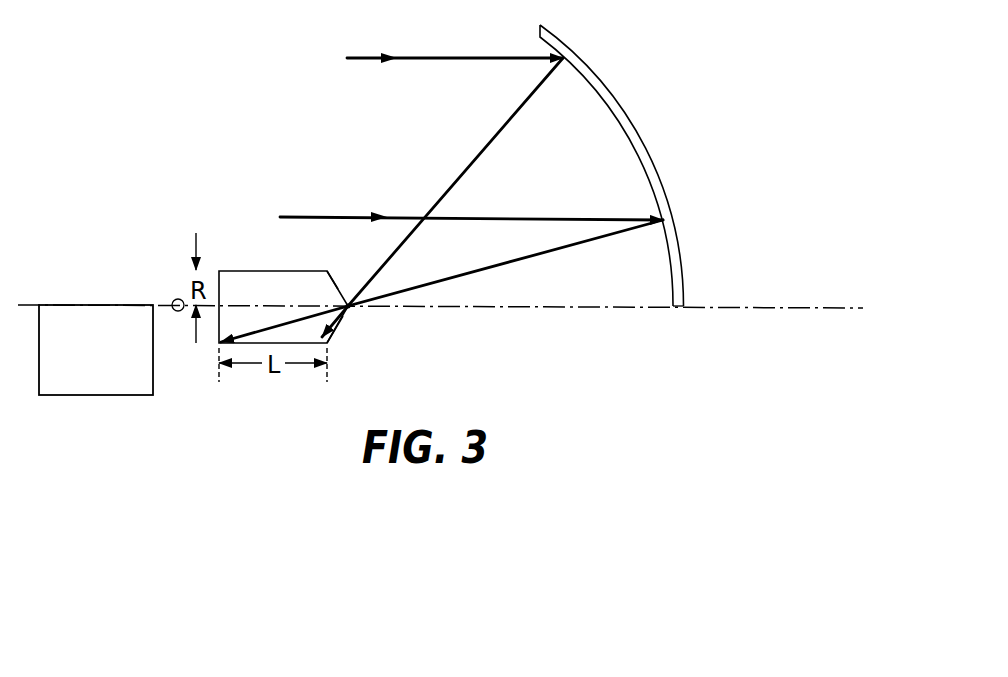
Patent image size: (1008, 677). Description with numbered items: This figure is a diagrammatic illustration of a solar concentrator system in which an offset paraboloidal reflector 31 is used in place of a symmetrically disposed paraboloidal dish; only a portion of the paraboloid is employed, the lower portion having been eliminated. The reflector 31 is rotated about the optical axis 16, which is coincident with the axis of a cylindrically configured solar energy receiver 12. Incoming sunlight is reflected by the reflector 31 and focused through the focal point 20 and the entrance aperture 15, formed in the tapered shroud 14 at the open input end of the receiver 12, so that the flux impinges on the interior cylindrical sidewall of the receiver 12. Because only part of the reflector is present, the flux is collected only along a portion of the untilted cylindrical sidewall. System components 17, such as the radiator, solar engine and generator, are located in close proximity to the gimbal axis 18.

The solar energy receiver 12 is at (257, 270).
The tapered shroud 14 is at (347, 292).
The aperture 15 is at (346, 317).
The optical axis 16 is at (823, 306).
The system components 17 is at (105, 305).
The gimbal axis 18 is at (178, 311).
The focal point 20 is at (334, 286).
The offset paraboloidal reflector 31 is at (634, 128).